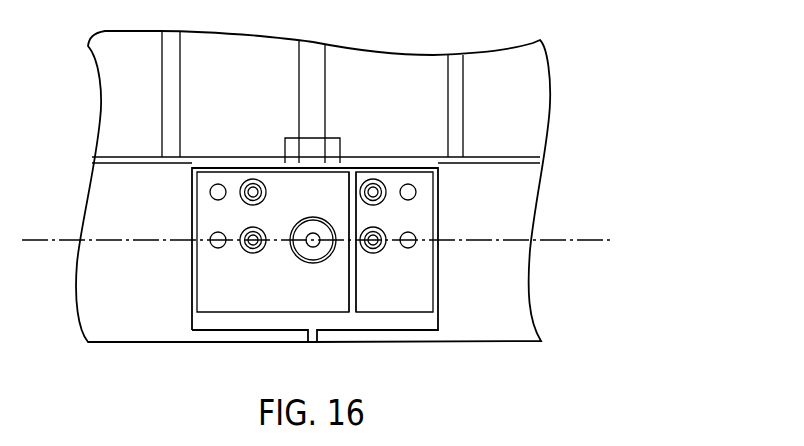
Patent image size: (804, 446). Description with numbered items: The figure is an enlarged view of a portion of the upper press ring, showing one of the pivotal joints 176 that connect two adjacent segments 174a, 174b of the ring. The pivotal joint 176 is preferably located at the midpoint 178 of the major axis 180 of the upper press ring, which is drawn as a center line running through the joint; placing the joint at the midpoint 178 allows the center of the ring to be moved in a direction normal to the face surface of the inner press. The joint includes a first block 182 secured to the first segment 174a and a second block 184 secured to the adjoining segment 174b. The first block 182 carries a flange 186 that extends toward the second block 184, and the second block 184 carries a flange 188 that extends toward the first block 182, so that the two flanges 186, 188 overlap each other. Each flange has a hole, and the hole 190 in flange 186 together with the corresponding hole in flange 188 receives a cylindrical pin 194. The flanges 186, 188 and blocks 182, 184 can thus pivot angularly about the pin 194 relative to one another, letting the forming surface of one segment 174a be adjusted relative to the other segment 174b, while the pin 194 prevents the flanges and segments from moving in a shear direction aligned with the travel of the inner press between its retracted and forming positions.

The segment 174a is at (122, 327).
The segment 174b is at (502, 327).
The pivotal joint 176 is at (196, 327).
The midpoint 178 is at (311, 233).
The major axis 180 is at (575, 242).
The first block 182 is at (230, 220).
The second block 184 is at (398, 295).
The flange 186 is at (333, 288).
The flange 188 is at (352, 298).
The hole 190 is at (327, 221).
The cylindrical pin 194 is at (315, 252).